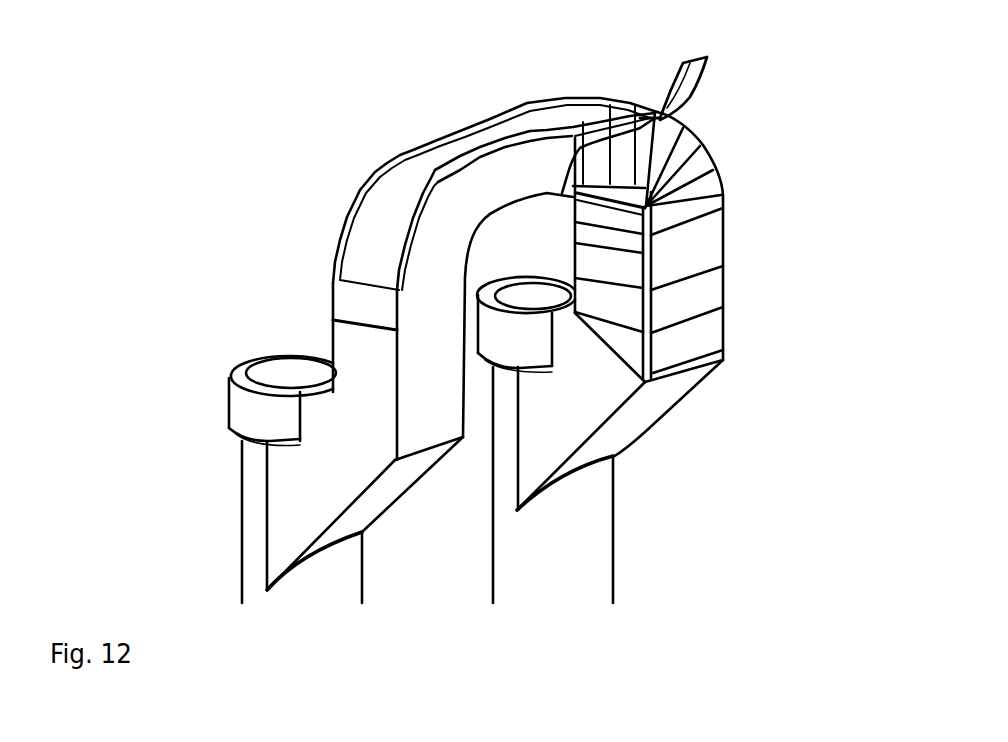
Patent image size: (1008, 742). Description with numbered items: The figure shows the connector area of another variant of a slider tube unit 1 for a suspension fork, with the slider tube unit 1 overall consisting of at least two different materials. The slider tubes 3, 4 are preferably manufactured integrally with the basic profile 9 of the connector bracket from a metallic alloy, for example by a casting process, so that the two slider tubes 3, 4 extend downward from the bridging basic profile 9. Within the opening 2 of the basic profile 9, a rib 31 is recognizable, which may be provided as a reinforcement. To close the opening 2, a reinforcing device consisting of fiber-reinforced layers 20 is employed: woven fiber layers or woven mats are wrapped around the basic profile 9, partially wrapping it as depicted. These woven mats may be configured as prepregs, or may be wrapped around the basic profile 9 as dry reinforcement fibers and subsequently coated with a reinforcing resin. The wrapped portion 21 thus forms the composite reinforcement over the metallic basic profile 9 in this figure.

The slider tube unit 1 is at (205, 210).
The opening 2 is at (390, 205).
The slider tube 3 is at (250, 593).
The slider tube 4 is at (593, 562).
The basic profile 9 is at (347, 216).
The fiber-reinforced layers 20 is at (687, 80).
The ribbed block 21 is at (713, 217).
The rib 31 is at (427, 168).